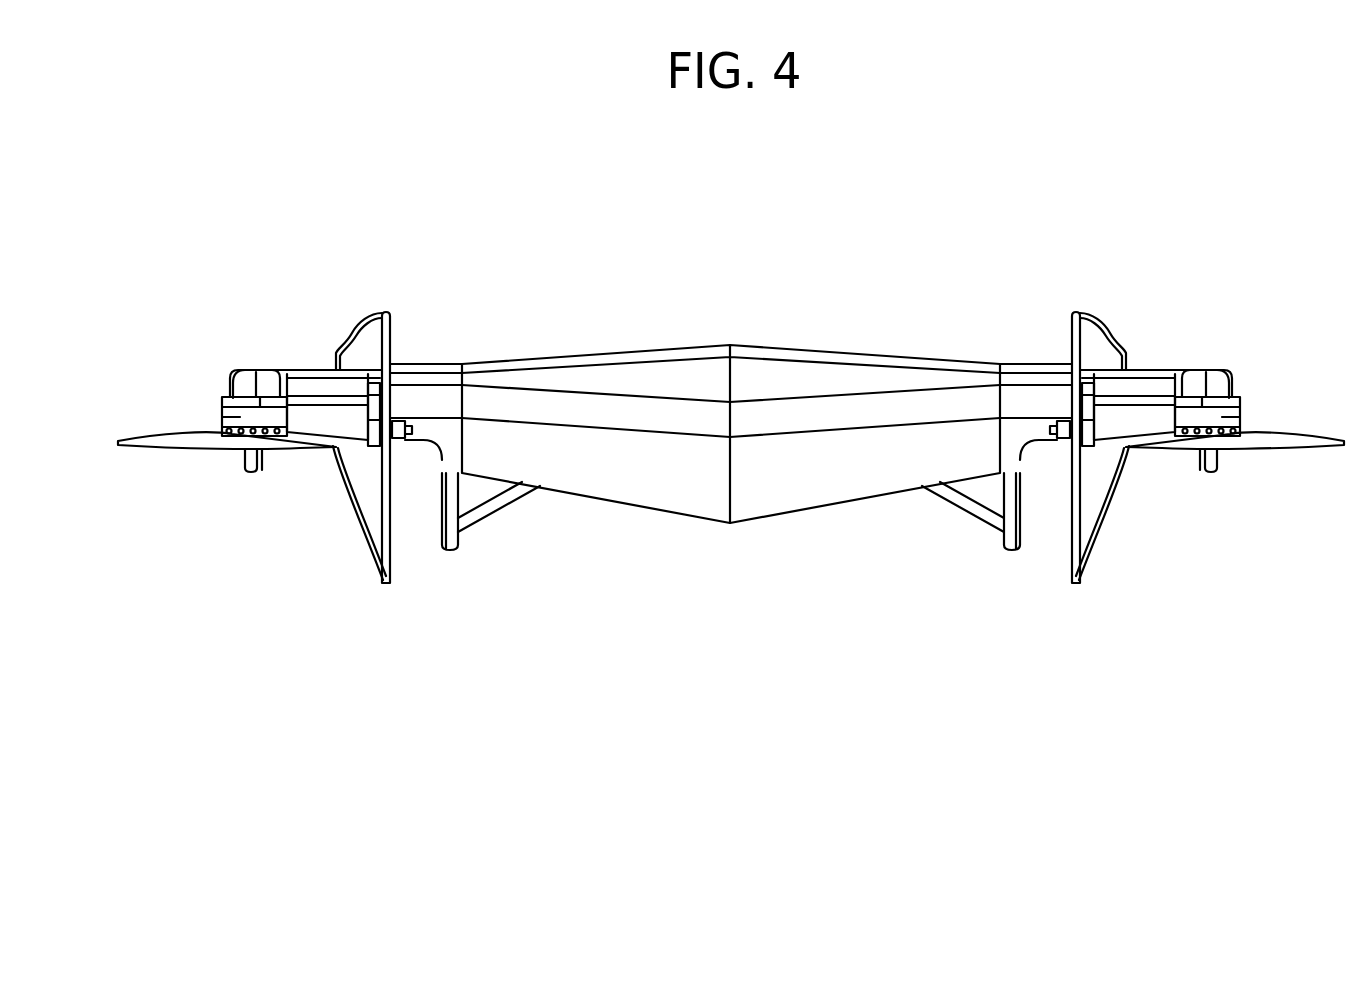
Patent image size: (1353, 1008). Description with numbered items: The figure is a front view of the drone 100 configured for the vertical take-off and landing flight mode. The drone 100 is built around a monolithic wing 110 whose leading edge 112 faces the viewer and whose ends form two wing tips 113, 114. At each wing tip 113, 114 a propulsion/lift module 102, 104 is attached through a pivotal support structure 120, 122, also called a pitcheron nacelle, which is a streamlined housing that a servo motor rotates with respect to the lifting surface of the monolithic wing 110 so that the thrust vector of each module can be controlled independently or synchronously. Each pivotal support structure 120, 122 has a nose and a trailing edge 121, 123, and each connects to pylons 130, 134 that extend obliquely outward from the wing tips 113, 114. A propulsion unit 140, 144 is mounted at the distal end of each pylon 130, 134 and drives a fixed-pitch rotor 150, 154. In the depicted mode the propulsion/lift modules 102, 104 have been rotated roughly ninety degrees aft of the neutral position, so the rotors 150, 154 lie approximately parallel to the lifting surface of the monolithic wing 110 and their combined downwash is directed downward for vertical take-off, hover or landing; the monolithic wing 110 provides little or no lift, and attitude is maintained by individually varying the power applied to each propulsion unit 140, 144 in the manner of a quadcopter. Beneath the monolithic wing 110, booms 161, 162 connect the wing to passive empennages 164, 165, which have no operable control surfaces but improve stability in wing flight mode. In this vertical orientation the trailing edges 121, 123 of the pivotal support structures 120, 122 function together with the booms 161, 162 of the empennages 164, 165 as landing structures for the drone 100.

The drone 100 is at (1203, 191).
The propulsion/lift module 102 is at (1143, 351).
The propulsion/lift module 104 is at (243, 351).
The monolithic wing 110 is at (802, 347).
The leading edge 112 is at (727, 440).
The wing tip 113 is at (1053, 347).
The wing tip 114 is at (415, 343).
The pivotal support structure 120 is at (1090, 337).
The trailing edge 121 is at (1070, 583).
The pivotal support structure 122 is at (365, 340).
The trailing edge 123 is at (387, 583).
The pylon 130 is at (1158, 377).
The pylon 134 is at (327, 417).
The propulsion unit 140 is at (1222, 418).
The propulsion unit 144 is at (260, 447).
The fixed-pitch rotor 150 is at (1253, 447).
The fixed-pitch rotor 154 is at (200, 442).
The boom 161 is at (1007, 542).
The boom 162 is at (447, 523).
The empennage 164 is at (962, 490).
The empennage 165 is at (488, 513).